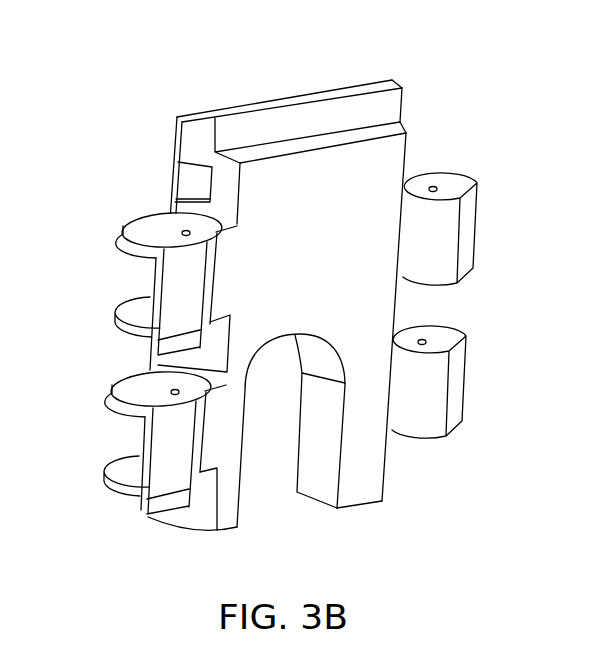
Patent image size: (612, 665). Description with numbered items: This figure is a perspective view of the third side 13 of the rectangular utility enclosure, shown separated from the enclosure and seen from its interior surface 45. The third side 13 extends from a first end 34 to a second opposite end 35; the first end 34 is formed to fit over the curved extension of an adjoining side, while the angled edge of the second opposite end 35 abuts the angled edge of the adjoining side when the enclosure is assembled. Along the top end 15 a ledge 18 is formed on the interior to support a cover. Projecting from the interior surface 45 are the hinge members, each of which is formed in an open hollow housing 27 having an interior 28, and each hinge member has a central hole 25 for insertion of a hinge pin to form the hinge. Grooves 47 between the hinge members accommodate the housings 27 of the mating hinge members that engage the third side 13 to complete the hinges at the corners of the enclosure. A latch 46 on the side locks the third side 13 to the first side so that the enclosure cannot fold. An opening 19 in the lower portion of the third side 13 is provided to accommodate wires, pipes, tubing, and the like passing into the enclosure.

The third side 13 is at (266, 92).
The top end 15 is at (322, 90).
The ledge 18 is at (388, 128).
The first end 34 is at (160, 135).
The second opposite end 35 is at (415, 99).
The latch 46 is at (190, 188).
The groove 47 is at (222, 347).
The housing 27 is at (122, 233).
The interior 28 is at (120, 279).
The central hole 25 is at (433, 187).
The opening 19 is at (265, 492).
The interior surface 45 is at (362, 488).